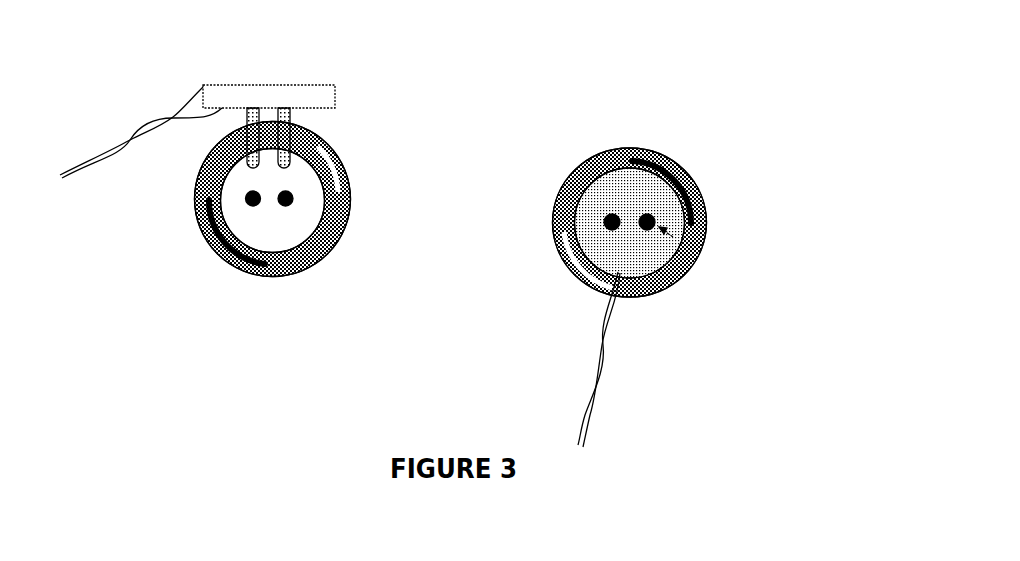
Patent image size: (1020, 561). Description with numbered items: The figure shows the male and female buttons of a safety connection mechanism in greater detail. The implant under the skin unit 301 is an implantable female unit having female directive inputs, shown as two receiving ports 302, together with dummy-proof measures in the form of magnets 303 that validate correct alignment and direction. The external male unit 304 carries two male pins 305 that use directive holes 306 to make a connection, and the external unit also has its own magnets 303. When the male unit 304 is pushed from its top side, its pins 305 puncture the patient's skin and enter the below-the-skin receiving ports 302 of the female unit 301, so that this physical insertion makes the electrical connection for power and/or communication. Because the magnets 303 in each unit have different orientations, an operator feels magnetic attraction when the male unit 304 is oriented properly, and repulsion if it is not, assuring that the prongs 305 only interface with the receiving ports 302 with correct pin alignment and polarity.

The implantable female unit 301 is at (662, 155).
The receiving ports 302 is at (703, 255).
The magnets 303 is at (265, 276).
The external male unit 304 is at (336, 89).
The male pins 305 is at (240, 144).
The directive holes 306 is at (297, 196).